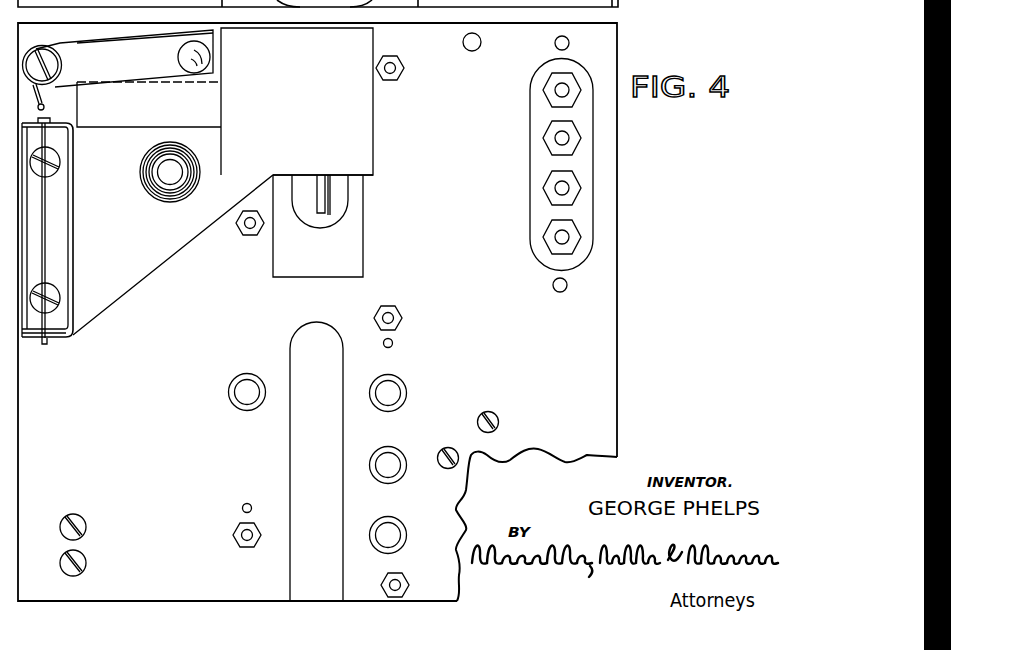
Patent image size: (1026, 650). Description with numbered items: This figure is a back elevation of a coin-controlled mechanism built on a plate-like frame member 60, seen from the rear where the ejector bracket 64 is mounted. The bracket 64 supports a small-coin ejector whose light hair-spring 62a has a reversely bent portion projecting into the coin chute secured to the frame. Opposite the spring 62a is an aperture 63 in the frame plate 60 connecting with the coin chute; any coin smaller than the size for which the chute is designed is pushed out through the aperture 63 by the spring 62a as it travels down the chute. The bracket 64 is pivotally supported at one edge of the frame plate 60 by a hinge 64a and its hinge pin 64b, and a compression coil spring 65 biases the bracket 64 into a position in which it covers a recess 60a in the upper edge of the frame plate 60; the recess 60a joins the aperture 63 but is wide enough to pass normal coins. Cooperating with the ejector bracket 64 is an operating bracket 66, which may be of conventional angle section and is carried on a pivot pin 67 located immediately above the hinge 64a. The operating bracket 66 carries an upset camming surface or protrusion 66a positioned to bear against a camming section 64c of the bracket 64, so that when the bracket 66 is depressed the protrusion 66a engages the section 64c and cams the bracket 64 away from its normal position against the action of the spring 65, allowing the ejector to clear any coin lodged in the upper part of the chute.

The frame member 60 is at (608, 315).
The recess 60a is at (297, 101).
The hair-spring 62a is at (328, 200).
The aperture 63 is at (347, 258).
The bracket 64 is at (363, 137).
The hinge 64a is at (73, 247).
The hinge pin 64b is at (44, 227).
The camming section 64c is at (205, 100).
The compression coil spring 65 is at (193, 173).
The operating bracket 66 is at (145, 65).
The camming protrusion 66a is at (204, 53).
The pivot pin 67 is at (50, 62).